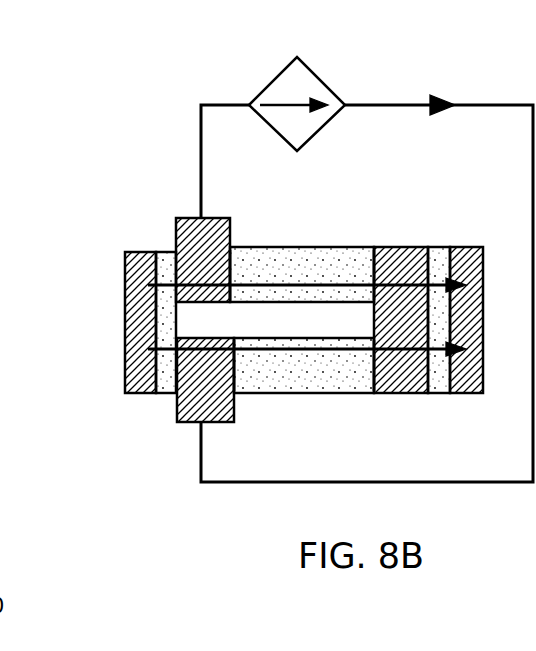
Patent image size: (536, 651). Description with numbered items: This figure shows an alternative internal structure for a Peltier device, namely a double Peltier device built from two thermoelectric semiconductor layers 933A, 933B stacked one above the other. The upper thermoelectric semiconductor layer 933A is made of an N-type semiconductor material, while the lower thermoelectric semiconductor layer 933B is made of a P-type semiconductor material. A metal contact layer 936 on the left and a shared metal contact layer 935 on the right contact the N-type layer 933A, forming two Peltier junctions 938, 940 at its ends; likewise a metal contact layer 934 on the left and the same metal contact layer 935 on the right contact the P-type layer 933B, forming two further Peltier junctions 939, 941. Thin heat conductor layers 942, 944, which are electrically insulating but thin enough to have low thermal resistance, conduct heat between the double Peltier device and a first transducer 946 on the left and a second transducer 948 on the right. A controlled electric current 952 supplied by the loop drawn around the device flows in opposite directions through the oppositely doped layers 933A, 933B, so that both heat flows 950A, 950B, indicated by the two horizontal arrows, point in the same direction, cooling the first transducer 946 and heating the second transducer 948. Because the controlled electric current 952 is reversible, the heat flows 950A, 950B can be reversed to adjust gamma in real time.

The controlled electric current 952 is at (440, 95).
The first transducer 946 is at (125, 268).
The heat conductor layer 942 is at (166, 252).
The metal contact layer 936 is at (212, 218).
The metal contact layer 934 is at (222, 422).
The thermoelectric semiconductor layer 933A is at (303, 247).
The thermoelectric semiconductor layer 933B is at (305, 393).
The Peltier junction 938 is at (232, 260).
The Peltier junction 940 is at (372, 268).
The Peltier junction 939 is at (240, 372).
The Peltier junction 941 is at (373, 372).
The metal contact layer 935 is at (396, 247).
The heat conductor layer 944 is at (437, 247).
The second transducer 948 is at (462, 393).
The heat flow 950A is at (419, 280).
The heat flow 950B is at (418, 352).